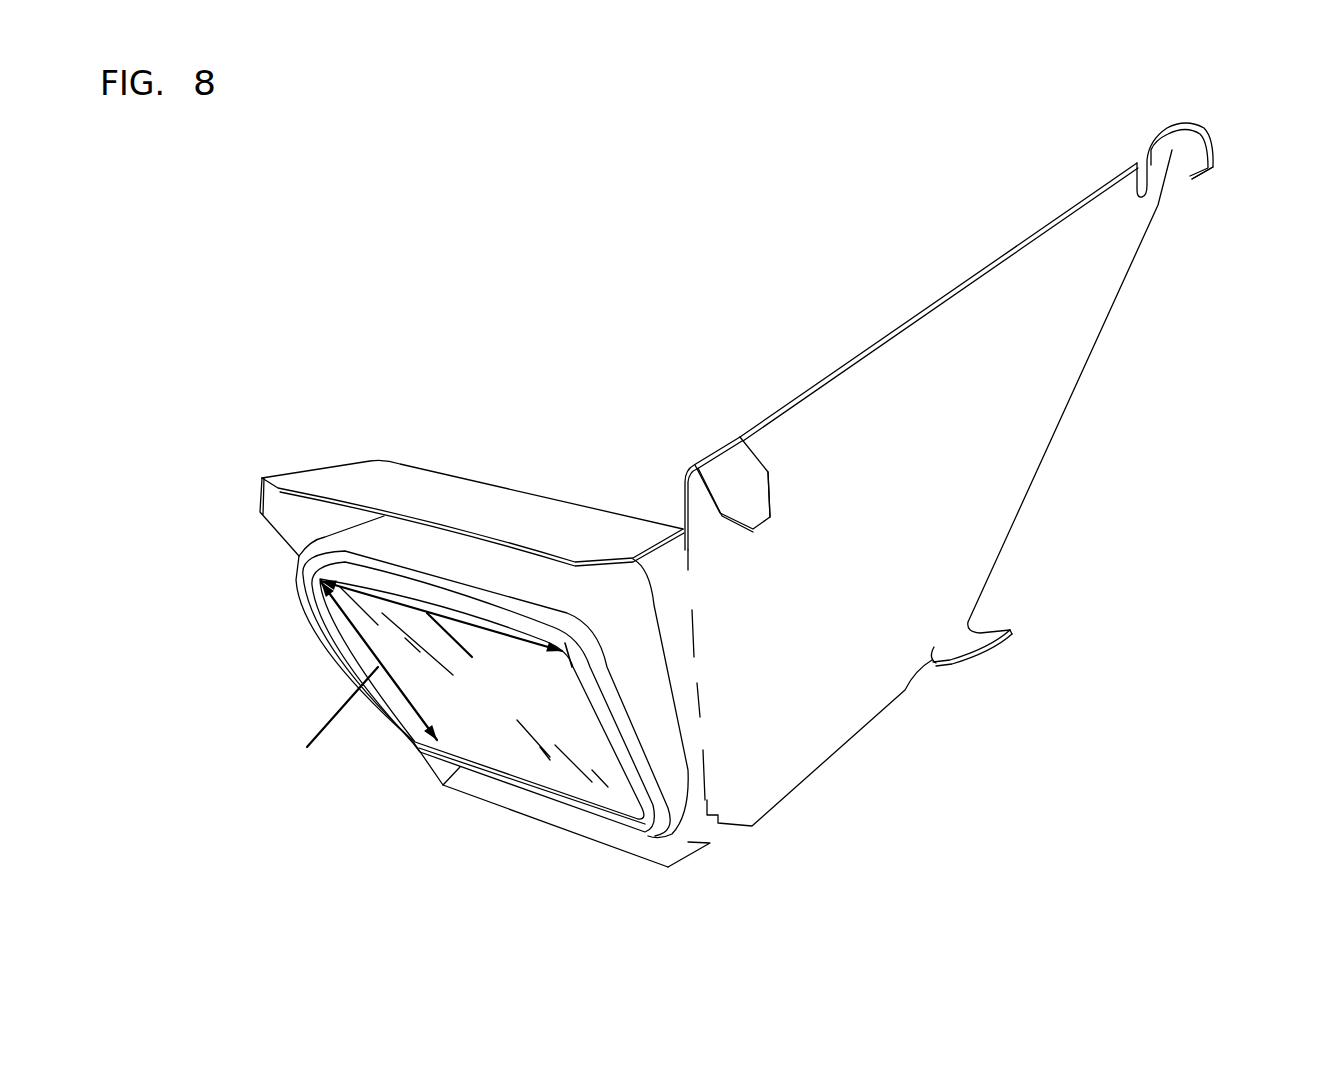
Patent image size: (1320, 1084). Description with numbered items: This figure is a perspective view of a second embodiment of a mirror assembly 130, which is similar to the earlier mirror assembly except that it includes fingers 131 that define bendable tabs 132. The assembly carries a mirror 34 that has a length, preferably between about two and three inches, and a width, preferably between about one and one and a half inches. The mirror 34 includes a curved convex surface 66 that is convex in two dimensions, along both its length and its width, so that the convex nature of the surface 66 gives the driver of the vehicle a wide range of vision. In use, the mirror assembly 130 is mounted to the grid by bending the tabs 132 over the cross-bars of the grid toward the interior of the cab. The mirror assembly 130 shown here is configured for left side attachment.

The mirror 34 is at (633, 769).
The curved convex surface 66 is at (508, 748).
The mirror assembly 130 is at (705, 282).
The fingers 131 is at (770, 520).
The bendable tabs 132 is at (768, 492).